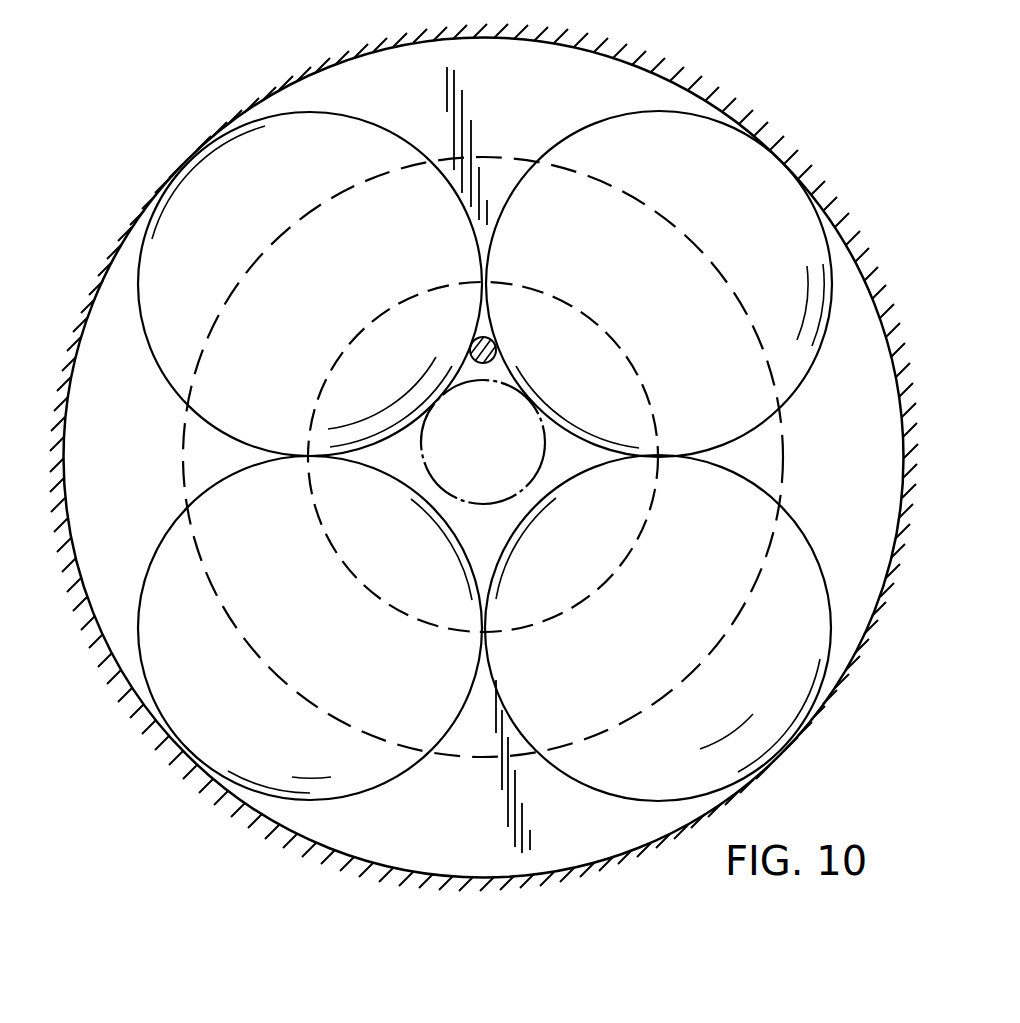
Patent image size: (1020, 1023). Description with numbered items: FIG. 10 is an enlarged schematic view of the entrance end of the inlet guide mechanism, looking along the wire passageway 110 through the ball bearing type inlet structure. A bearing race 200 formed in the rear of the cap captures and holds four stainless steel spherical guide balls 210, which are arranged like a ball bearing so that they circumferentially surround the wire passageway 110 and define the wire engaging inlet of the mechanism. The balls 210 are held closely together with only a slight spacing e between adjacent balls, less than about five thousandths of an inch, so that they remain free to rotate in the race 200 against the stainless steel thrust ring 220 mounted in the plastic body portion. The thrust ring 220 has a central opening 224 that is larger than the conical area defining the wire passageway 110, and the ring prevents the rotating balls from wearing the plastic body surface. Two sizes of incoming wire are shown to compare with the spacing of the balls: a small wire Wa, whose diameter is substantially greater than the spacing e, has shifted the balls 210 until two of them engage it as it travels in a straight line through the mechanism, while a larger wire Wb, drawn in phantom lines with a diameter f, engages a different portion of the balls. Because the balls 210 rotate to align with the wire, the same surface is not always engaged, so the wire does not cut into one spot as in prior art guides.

The bearing race 200 is at (502, 40).
The spherical guide balls 210 is at (313, 128).
The thrust ring 220 is at (762, 442).
The central opening 224 is at (333, 541).
The wire passageway 110 is at (488, 543).
The small wire Wa is at (492, 341).
The larger wire Wb is at (533, 483).
The spacing between spherical balls e is at (538, 279).
The filler diameter d is at (428, 349).
The diameter of larger wire f is at (590, 441).